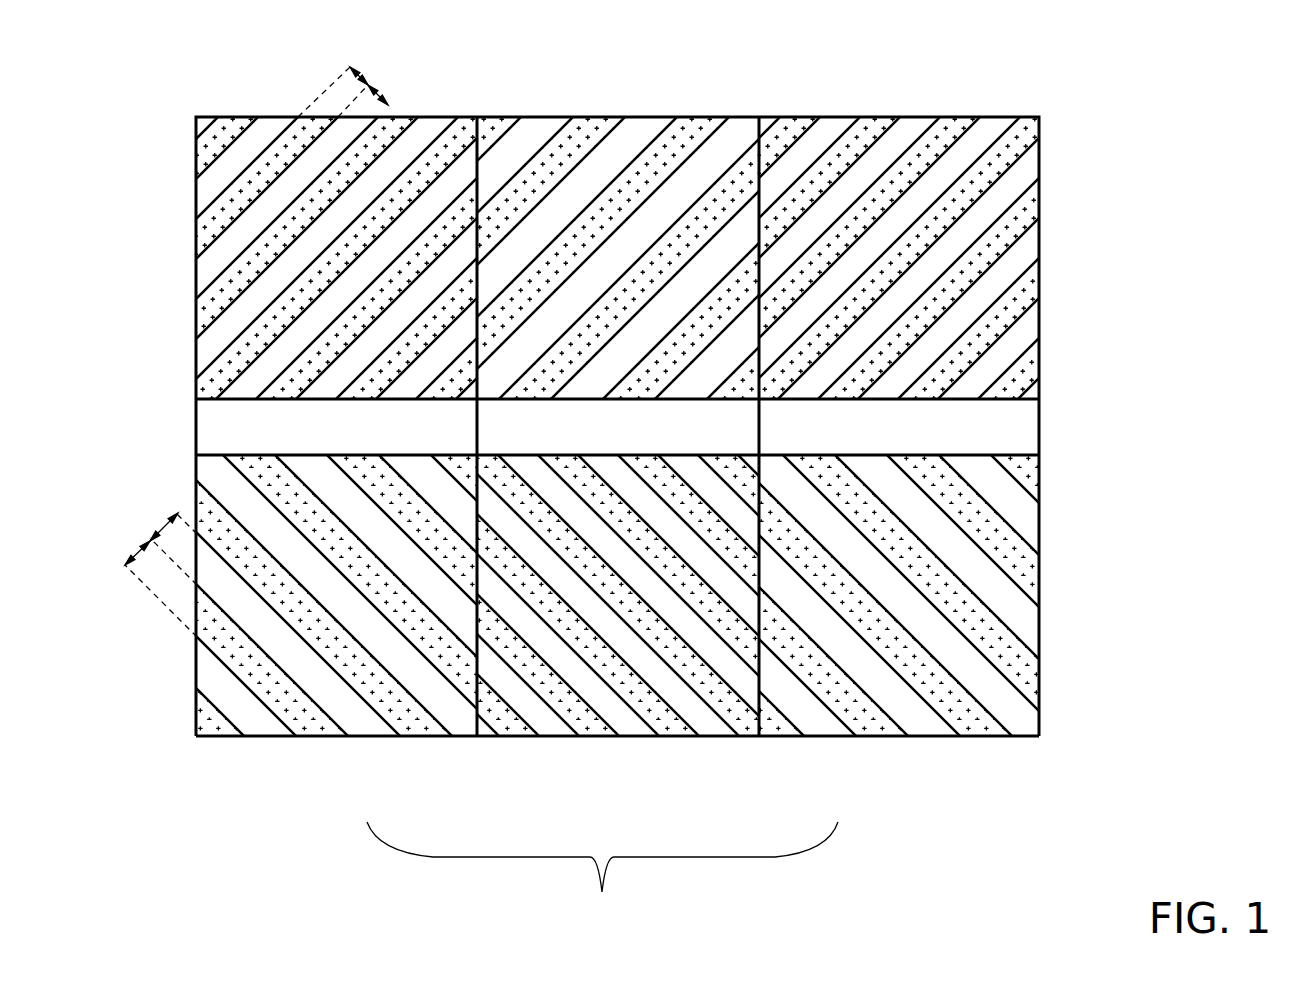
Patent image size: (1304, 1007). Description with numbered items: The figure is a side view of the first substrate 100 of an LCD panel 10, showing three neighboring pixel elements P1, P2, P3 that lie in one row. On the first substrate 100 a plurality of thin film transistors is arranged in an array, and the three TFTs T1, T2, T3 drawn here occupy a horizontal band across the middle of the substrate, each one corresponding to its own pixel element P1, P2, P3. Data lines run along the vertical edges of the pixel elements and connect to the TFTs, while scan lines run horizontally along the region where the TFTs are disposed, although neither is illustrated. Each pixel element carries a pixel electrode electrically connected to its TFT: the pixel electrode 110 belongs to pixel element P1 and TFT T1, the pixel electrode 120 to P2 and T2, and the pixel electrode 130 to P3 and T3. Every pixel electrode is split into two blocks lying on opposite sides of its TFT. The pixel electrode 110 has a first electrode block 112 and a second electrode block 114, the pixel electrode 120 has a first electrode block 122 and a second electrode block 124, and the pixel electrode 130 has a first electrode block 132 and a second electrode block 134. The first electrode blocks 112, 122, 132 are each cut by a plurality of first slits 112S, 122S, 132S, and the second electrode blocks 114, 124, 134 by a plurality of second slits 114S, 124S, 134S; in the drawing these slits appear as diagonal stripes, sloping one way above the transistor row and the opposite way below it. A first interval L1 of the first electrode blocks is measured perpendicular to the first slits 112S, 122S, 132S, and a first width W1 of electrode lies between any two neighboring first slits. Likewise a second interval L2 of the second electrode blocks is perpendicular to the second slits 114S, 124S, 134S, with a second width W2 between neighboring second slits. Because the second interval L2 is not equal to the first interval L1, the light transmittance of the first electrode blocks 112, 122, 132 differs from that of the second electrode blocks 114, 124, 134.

The LCD panel 10 is at (1157, 273).
The first substrate 100 is at (602, 876).
The pixel electrode 110 is at (564, 503).
The first electrode block 112 is at (477, 503).
The first slits 112S is at (212, 258).
The second electrode block 114 is at (564, 503).
The second slits 114S is at (240, 712).
The pixel electrode 120 is at (652, 503).
The first electrode block 122 is at (652, 503).
The first slits 122S is at (702, 627).
The second electrode block 124 is at (629, 503).
The second slits 124S is at (518, 147).
The pixel electrode 130 is at (652, 503).
The first electrode block 132 is at (652, 503).
The first slits 132S is at (895, 142).
The second electrode block 134 is at (652, 503).
The second slits 134S is at (1020, 706).
The thin film transistor T1 is at (336, 427).
The thin film transistor T2 is at (618, 427).
The thin film transistor T3 is at (899, 427).
The pixel element P1 is at (385, 738).
The pixel element P2 is at (553, 738).
The pixel element P3 is at (820, 737).
The first width W1 is at (351, 78).
The first interval L1 is at (396, 92).
The second width W2 is at (141, 580).
The second interval L2 is at (160, 540).